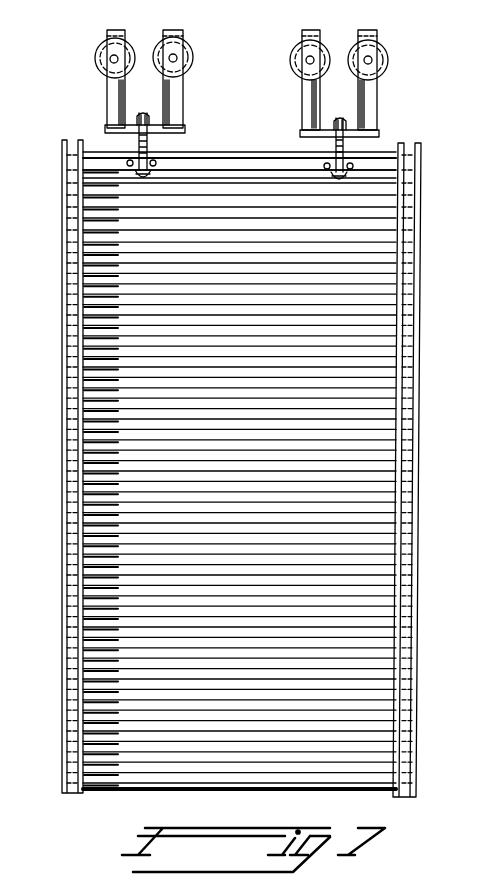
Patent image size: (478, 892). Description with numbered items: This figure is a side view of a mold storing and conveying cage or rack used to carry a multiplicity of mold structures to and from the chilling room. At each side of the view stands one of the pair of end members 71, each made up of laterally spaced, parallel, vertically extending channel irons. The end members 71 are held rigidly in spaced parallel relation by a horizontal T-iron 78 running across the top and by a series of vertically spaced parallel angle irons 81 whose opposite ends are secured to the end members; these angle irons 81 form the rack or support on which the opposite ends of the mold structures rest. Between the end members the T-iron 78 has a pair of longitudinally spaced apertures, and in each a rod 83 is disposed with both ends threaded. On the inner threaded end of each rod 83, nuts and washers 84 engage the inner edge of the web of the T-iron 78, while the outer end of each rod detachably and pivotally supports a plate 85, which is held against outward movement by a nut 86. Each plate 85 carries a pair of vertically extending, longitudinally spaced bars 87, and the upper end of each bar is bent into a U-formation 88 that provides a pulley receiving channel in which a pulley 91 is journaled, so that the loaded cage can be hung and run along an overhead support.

The end members 71 is at (72, 157).
The T-iron 78 is at (211, 152).
The angle irons 81 is at (63, 457).
The rod 83 is at (139, 148).
The nuts and washers 84 is at (330, 177).
The plate 85 is at (185, 128).
The nut 86 is at (145, 118).
The bars 87 is at (165, 88).
The U-formation 88 is at (168, 30).
The pulley 91 is at (153, 53).